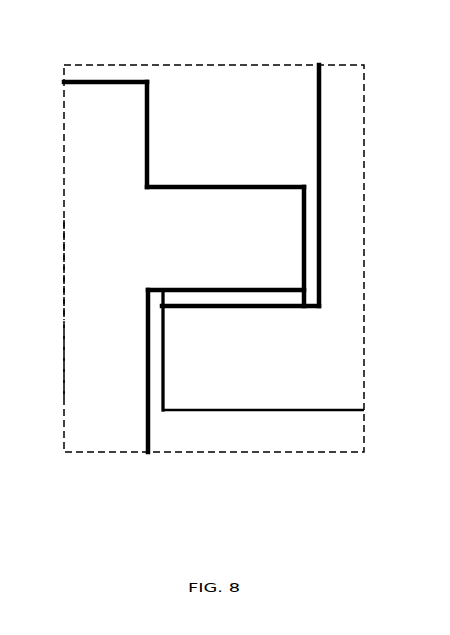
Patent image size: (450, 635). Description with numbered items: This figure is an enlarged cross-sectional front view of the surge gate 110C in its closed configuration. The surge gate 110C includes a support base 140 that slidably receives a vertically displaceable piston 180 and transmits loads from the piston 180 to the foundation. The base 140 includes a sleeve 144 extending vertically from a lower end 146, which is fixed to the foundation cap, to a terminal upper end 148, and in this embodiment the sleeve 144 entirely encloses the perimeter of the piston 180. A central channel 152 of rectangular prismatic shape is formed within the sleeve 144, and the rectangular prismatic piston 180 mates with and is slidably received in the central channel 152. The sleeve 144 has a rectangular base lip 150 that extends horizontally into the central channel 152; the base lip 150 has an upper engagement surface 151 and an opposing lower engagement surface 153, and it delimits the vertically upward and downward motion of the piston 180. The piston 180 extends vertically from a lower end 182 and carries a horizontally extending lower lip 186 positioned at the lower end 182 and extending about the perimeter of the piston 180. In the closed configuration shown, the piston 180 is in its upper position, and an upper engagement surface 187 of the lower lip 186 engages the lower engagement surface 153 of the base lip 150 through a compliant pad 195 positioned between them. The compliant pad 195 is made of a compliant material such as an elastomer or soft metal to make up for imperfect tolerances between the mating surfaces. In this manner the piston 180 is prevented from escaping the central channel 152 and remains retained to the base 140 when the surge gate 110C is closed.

The surge gate 110C is at (80, 88).
The terminal upper end 148 is at (110, 80).
The central channel 152 is at (243, 160).
The piston 180 is at (344, 160).
The upper engagement surface 151 is at (206, 190).
The base lip 150 is at (278, 229).
The lower engagement surface 153 is at (228, 288).
The lower end 146 is at (100, 243).
The sleeve 144 is at (86, 295).
The support base 140 is at (98, 354).
The compliant pad 195 is at (190, 298).
The upper engagement surface 187 is at (258, 310).
The lower lip 186 is at (222, 378).
The lower end 182 is at (335, 411).